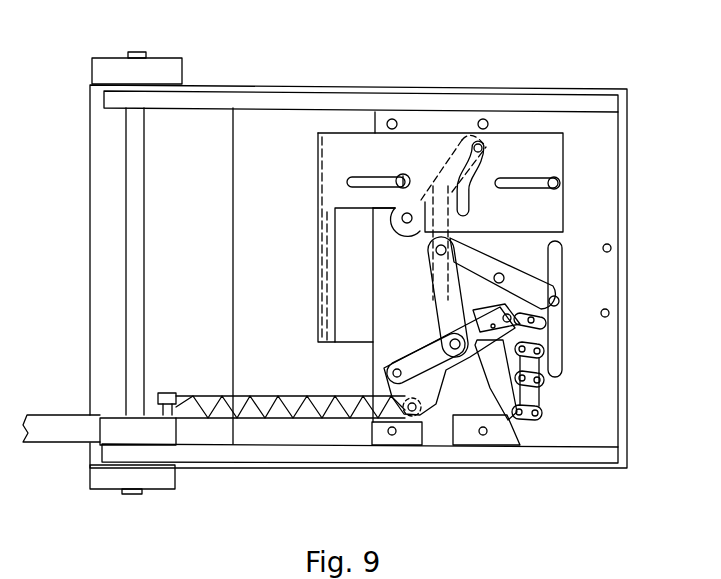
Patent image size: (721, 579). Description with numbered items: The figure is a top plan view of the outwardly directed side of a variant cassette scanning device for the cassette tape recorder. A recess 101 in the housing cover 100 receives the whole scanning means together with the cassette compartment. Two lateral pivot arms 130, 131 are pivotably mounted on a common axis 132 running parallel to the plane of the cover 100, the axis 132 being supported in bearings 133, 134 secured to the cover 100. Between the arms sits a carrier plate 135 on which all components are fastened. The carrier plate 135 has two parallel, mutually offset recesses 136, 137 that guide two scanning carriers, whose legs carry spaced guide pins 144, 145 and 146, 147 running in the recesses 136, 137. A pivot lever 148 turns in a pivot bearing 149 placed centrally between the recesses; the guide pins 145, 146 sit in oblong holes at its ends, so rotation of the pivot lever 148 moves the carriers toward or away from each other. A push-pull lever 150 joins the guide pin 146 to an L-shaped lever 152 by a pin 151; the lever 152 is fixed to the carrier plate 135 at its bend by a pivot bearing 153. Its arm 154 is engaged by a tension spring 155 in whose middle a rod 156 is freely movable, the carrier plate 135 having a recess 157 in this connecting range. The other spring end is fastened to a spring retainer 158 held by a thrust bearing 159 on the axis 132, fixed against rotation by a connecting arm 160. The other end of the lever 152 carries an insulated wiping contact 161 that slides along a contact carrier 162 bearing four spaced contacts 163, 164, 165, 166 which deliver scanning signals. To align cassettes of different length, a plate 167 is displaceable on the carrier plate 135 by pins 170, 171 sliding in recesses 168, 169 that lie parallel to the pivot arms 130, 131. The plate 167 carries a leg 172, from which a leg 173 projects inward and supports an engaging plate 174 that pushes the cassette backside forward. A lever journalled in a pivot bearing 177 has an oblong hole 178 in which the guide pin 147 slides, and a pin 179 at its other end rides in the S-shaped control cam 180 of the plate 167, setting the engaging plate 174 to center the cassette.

The housing cover 100 is at (306, 87).
The recess 101 is at (183, 168).
The pivot arm 130 is at (190, 102).
The pivot arm 131 is at (260, 135).
The axis 132 is at (137, 224).
The bearing 133 is at (109, 70).
The bearing 134 is at (104, 480).
The carrier plate 135 is at (492, 231).
The recess 136 is at (557, 342).
The recess 137 is at (450, 243).
The guide pin 144 is at (545, 358).
The guide pin 145 is at (560, 301).
The guide pin 146 is at (497, 258).
The guide pin 147 is at (448, 172).
The pivot lever 148 is at (527, 291).
The pivot bearing 149 is at (463, 297).
The push-pull lever 150 is at (465, 420).
The pin 151 is at (496, 380).
The lever 152 is at (428, 395).
The pivot bearing 153 is at (397, 370).
The arm 154 is at (392, 448).
The tension spring 155 is at (320, 412).
The rod 156 is at (277, 412).
The recess 157 is at (400, 403).
The spring retainer 158 is at (173, 408).
The thrust bearing 159 is at (152, 430).
The connecting arm 160 is at (47, 430).
The wiping contact 161 is at (498, 348).
The contact carrier 162 is at (504, 437).
The contact 163 is at (533, 415).
The contact 164 is at (542, 408).
The contact 165 is at (560, 353).
The contact 166 is at (562, 328).
The plate 167 is at (552, 167).
The recess 168 is at (563, 137).
The recess 169 is at (358, 182).
The pin 170 is at (562, 182).
The pin 171 is at (404, 174).
The leg 172 is at (329, 336).
The leg 173 is at (317, 228).
The engaging plate 174 is at (418, 198).
The pivot bearing 177 is at (398, 226).
The oblong hole 178 is at (427, 233).
The pin 179 is at (522, 183).
The control cam 180 is at (541, 182).